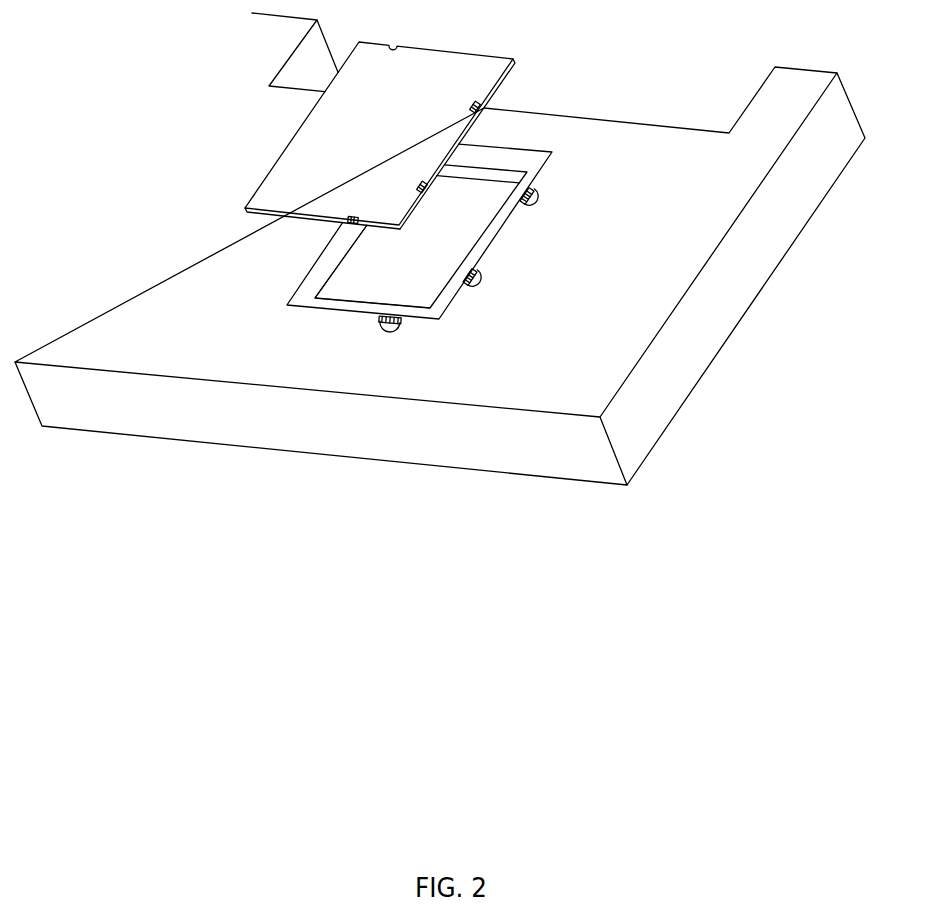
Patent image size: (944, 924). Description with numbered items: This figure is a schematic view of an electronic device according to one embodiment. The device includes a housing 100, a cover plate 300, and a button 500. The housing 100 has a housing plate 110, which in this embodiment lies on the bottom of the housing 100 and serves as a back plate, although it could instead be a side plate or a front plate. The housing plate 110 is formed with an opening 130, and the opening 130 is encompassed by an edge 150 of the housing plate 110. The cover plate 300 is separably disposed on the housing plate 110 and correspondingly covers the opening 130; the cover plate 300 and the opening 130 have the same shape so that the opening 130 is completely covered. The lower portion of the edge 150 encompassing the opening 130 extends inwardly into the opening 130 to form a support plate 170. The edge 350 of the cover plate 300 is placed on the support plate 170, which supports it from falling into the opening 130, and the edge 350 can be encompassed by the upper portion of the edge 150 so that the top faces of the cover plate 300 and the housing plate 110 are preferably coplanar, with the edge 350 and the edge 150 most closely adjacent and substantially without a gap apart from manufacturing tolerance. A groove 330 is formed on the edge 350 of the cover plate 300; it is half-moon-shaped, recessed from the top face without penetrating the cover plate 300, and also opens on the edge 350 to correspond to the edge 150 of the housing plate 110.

The housing 100 is at (440, 249).
The housing plate 110 is at (693, 216).
The opening 130 is at (353, 277).
The edge of the housing plate 150 is at (439, 301).
The support plate 170 is at (492, 160).
The cover plate 300 is at (316, 252).
The groove 330 is at (353, 213).
The edge of the cover plate 350 is at (253, 213).
The button 500 is at (540, 194).